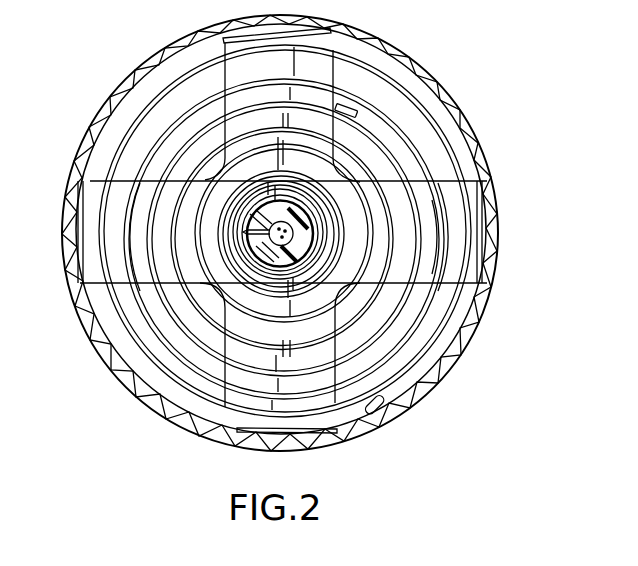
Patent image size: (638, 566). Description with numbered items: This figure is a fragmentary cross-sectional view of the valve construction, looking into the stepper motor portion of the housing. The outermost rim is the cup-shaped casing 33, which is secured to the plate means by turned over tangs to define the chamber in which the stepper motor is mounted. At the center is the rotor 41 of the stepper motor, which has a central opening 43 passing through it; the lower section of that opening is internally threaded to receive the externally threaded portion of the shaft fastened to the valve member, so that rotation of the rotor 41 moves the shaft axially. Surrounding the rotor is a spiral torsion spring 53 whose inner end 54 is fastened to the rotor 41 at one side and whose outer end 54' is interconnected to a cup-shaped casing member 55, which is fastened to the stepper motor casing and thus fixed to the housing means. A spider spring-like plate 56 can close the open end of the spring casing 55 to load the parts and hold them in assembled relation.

The cup-shaped casing 33 is at (427, 77).
The spiral torsion spring 53 is at (428, 148).
The spider spring-like plate 56 is at (455, 207).
The cup-shaped casing member 55 is at (462, 302).
The outer end 54' is at (402, 428).
The central opening 43 is at (287, 208).
The rotor 41 is at (300, 240).
The inner end 54 is at (259, 274).